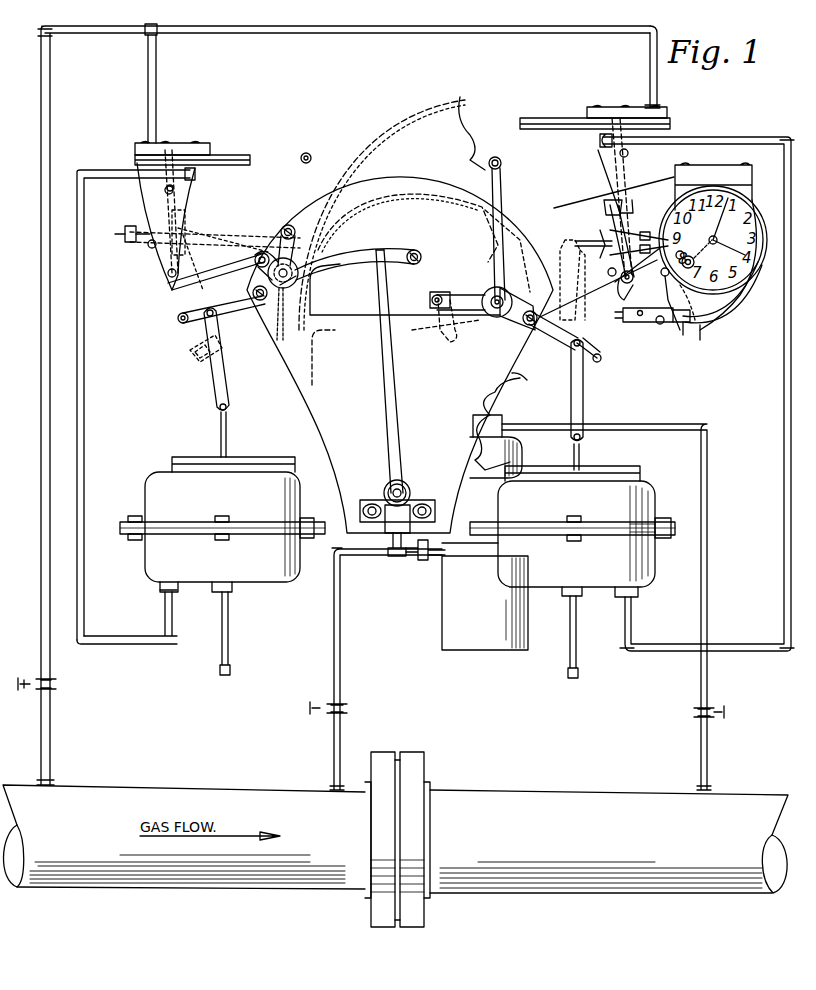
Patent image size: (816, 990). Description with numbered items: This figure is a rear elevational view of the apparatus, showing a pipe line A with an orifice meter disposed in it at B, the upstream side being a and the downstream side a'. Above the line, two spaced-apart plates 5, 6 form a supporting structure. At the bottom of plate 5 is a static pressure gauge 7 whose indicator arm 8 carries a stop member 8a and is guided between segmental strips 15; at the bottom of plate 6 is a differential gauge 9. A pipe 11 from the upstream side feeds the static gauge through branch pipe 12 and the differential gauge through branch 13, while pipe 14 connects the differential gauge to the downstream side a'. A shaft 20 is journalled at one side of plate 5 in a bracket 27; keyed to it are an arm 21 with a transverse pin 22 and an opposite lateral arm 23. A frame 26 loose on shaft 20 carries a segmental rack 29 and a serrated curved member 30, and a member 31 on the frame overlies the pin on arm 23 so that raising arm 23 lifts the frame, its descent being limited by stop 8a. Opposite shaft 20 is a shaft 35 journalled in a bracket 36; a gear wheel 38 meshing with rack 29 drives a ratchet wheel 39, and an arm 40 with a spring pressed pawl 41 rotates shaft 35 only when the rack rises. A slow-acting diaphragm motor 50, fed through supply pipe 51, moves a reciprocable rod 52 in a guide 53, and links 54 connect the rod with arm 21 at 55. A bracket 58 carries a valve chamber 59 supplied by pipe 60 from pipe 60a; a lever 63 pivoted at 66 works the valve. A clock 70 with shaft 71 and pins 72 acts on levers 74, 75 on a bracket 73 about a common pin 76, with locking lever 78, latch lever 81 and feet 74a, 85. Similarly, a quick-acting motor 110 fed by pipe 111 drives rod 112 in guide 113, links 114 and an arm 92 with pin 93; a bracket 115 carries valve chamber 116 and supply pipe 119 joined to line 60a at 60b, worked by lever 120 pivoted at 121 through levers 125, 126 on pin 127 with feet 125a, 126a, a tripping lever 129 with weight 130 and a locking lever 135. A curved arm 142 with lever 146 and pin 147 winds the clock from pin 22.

The plate 5 is at (400, 343).
The plate 6 is at (488, 388).
The static pressure gauge 7 is at (410, 490).
The indicator arm 8 is at (390, 404).
The stop member 8a is at (386, 232).
The differential gauge 9 is at (525, 452).
The pipe 11 is at (341, 627).
The branch pipe 12 is at (390, 552).
The branch pipe 13 is at (418, 560).
The pipe 14 is at (710, 510).
The segmental strips 15 is at (338, 270).
The shaft 20 is at (508, 292).
The arm 21 is at (447, 322).
The transverse pin 22 is at (672, 322).
The lateral arm 23 is at (470, 290).
The frame 26 is at (452, 220).
The bracket 27 is at (512, 375).
The segmental rack 29 is at (345, 158).
The serrated curved member 30 is at (382, 196).
The member 31 is at (437, 294).
The shaft 35 is at (290, 327).
The bracket 36 is at (275, 290).
The gear wheel 38 is at (289, 224).
The ratchet wheel 39 is at (322, 257).
The arm 40 is at (245, 262).
The spring pressed pawl 41 is at (270, 248).
The fluid pressure diaphragm motor 50 is at (572, 531).
The supply pipe 51 is at (720, 140).
The reciprocable rod 52 is at (581, 452).
The guide 53 is at (580, 630).
The links 54 is at (585, 392).
The connection 55 is at (622, 318).
The bracket 58 is at (557, 118).
The valve chamber 59 is at (610, 107).
The pipe 60 is at (658, 80).
The pipe 60a is at (51, 735).
The connection 60b is at (160, 45).
The lever 63 is at (610, 178).
The pivot 66 is at (618, 155).
The clock 70 is at (712, 318).
The shaft 71 is at (686, 335).
The pins 72 is at (668, 284).
The bracket 73 is at (652, 268).
The pivoted lever 74 is at (625, 205).
The angularly extending foot 74a is at (601, 286).
The pivoted lever 75 is at (575, 238).
The common pin 76 is at (598, 288).
The locking lever 78 is at (645, 240).
The latch lever 81 is at (602, 238).
The angular foot 85 is at (620, 314).
The arm 92 is at (192, 306).
The transverse pin 93 is at (178, 322).
The diaphragm motor 110 is at (222, 524).
The pipe 111 is at (85, 197).
The rod 112 is at (219, 430).
The guide 113 is at (230, 636).
The links 114 is at (212, 380).
The bracket 115 is at (222, 162).
The valve chamber 116 is at (183, 143).
The fluid pressure supply pipe 119 is at (158, 112).
The lever 120 is at (178, 200).
The pivot 121 is at (165, 190).
The lever 125 is at (165, 228).
The angular foot 125a is at (223, 261).
The lever 126 is at (188, 232).
The angular foot 126a is at (204, 271).
The pin 127 is at (168, 276).
The tripping lever 129 is at (122, 232).
The weight 130 is at (134, 243).
The locking lever 135 is at (160, 248).
The curved arm 142 is at (742, 290).
The pivoted lever 146 is at (590, 334).
The pin 147 is at (680, 322).
The pipe line A is at (175, 893).
The upstream side a is at (172, 889).
The downstream side a' is at (609, 857).
The orifice meter B is at (396, 928).